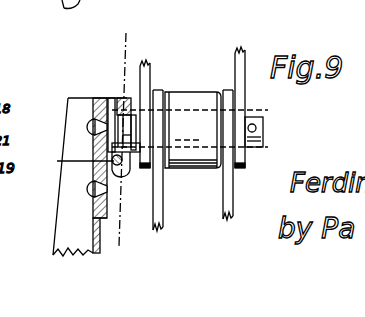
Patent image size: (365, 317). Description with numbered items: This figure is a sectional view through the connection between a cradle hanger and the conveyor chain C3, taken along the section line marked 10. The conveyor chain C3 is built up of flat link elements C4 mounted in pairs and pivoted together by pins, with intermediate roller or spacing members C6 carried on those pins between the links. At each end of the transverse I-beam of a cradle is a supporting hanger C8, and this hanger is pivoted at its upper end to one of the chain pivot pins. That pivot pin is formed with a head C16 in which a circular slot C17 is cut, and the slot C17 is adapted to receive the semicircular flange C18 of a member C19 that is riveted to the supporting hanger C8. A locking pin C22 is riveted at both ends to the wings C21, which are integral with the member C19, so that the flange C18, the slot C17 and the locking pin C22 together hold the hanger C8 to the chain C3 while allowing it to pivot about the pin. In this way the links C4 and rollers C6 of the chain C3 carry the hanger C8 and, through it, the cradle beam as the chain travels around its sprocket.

The section line 10- 10 is at (127, 33).
The supporting hanger C8 is at (62, 226).
The member C19 is at (93, 200).
The locking pin C22 is at (70, 153).
The wings C21 is at (112, 168).
The head C16 is at (118, 102).
The semicircular flange C18 is at (128, 100).
The circular slot C17 is at (123, 147).
The flat link elements C4 is at (223, 200).
The roller or spacing members C6 is at (199, 98).
The conveyor chain C3 is at (246, 103).